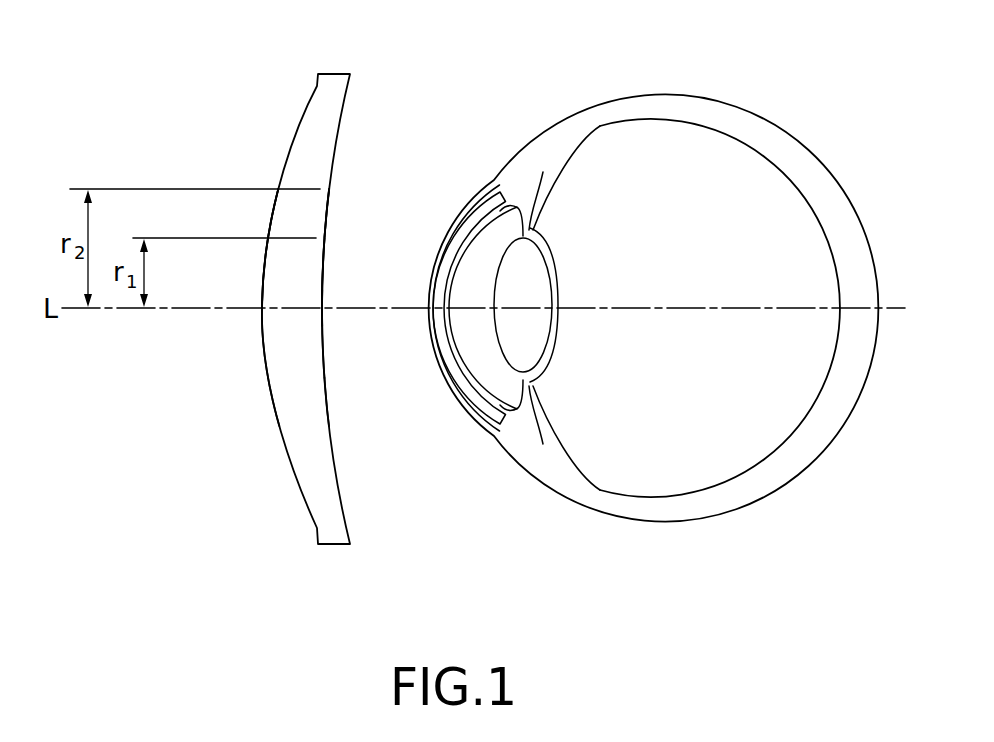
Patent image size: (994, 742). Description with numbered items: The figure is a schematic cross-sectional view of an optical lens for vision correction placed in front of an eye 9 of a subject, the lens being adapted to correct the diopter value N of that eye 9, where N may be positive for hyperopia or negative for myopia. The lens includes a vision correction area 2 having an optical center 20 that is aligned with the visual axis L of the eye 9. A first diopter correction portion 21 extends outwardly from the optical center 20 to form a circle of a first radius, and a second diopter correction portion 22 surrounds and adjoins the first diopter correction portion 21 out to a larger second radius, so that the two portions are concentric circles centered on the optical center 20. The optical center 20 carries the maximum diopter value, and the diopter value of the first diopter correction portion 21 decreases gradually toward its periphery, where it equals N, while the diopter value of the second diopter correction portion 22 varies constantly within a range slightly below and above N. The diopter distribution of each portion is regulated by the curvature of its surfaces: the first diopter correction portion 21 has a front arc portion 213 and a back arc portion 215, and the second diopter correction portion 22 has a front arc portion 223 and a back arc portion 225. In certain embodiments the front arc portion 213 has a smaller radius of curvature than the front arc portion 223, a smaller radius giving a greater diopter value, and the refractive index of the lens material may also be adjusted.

The vision correction area 2 is at (388, 148).
The optical center 20 is at (326, 307).
The first diopter correction portion 21 is at (310, 268).
The second diopter correction portion 22 is at (310, 210).
The front arc portion of the first diopter correction portion 213 is at (271, 262).
The back arc portion of the first diopter correction portion 215 is at (321, 284).
The front arc portion of the second diopter correction portion 223 is at (282, 201).
The back arc portion of the second diopter correction portion 225 is at (325, 221).
The eye 9 is at (723, 115).